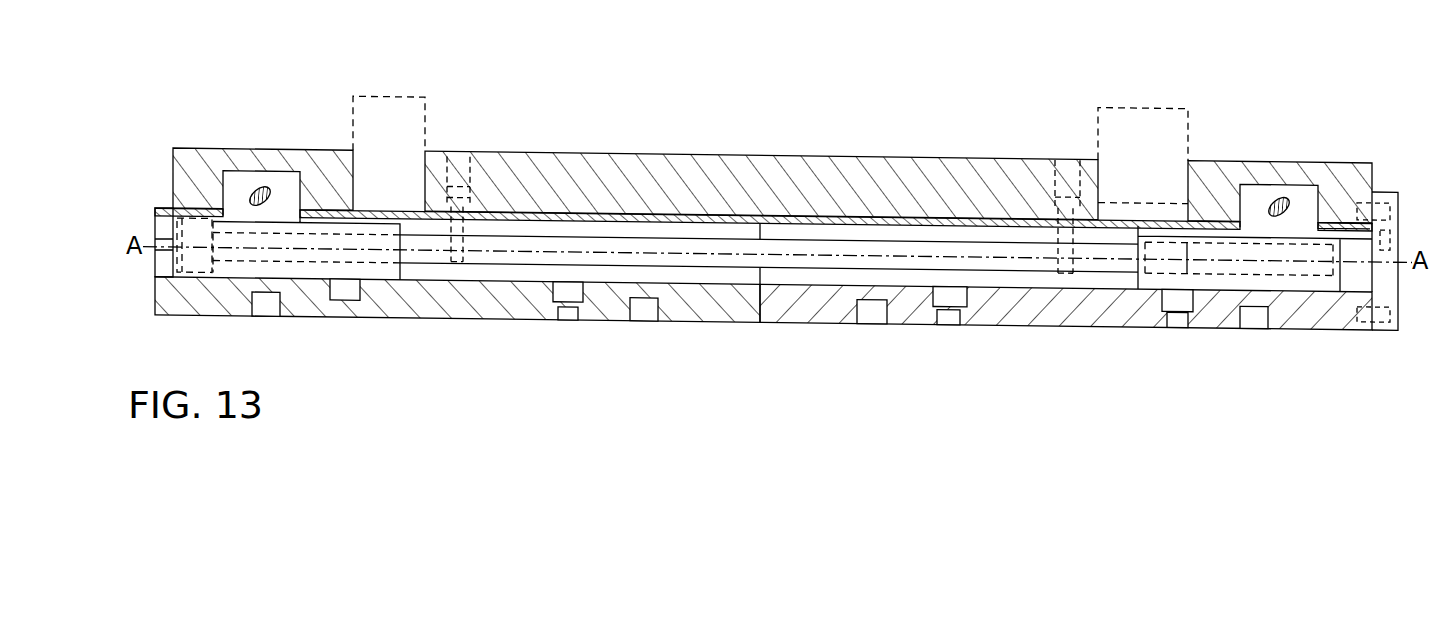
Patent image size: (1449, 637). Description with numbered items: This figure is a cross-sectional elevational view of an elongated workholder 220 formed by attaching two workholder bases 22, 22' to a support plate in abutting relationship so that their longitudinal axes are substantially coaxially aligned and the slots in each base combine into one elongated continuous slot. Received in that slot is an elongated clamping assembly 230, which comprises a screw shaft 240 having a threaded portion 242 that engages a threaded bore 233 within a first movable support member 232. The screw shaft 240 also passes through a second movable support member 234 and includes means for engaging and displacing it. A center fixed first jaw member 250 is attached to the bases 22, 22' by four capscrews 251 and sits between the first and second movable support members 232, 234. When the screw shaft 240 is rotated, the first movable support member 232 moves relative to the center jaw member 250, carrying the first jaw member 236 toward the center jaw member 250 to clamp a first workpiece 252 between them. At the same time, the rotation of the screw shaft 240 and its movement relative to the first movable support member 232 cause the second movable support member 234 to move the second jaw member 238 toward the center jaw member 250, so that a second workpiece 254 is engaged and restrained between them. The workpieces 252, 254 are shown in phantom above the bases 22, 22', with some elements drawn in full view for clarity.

The workholder base 22 is at (457, 323).
The workholder base 22' is at (1066, 325).
The elongated workholder 220 is at (1289, 127).
The elongated clamping assembly 230 is at (840, 226).
The first movable support member 232 is at (235, 182).
The threaded bore 233 is at (266, 262).
The second movable support member 234 is at (1298, 207).
The first jaw member 236 is at (247, 146).
The second jaw member 238 is at (1210, 162).
The screw shaft 240 is at (723, 228).
The threaded portion 242 is at (498, 278).
The center fixed first jaw member 250 is at (612, 151).
The capscrews 251 is at (462, 193).
The first workpiece 252 is at (398, 108).
The second workpiece 254 is at (1145, 125).